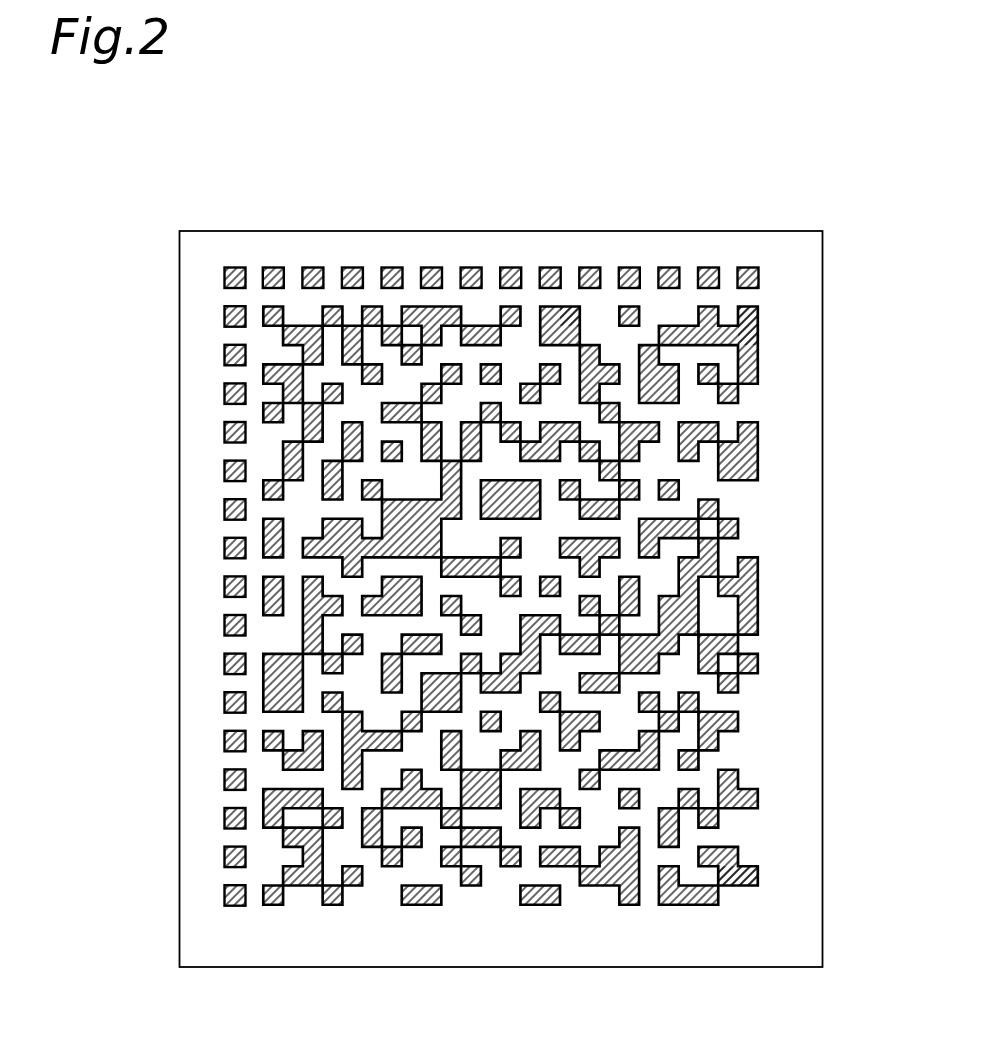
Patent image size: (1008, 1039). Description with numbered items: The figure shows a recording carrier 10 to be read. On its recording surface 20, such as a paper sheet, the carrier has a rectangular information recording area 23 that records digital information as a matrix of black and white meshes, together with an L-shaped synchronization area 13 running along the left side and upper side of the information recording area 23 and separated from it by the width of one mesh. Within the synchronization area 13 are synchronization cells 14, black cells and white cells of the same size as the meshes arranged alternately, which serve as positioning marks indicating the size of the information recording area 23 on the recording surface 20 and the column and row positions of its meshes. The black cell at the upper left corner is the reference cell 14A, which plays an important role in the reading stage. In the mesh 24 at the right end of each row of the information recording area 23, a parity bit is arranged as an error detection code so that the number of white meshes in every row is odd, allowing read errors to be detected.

The recording carrier 10 is at (130, 238).
The synchronization area 13 is at (622, 258).
The synchronization cells 14 is at (252, 272).
The reference cell 14A is at (230, 268).
The recording surface 20 is at (708, 958).
The information recording area 23 is at (564, 299).
The area for error detection code 24 is at (758, 312).